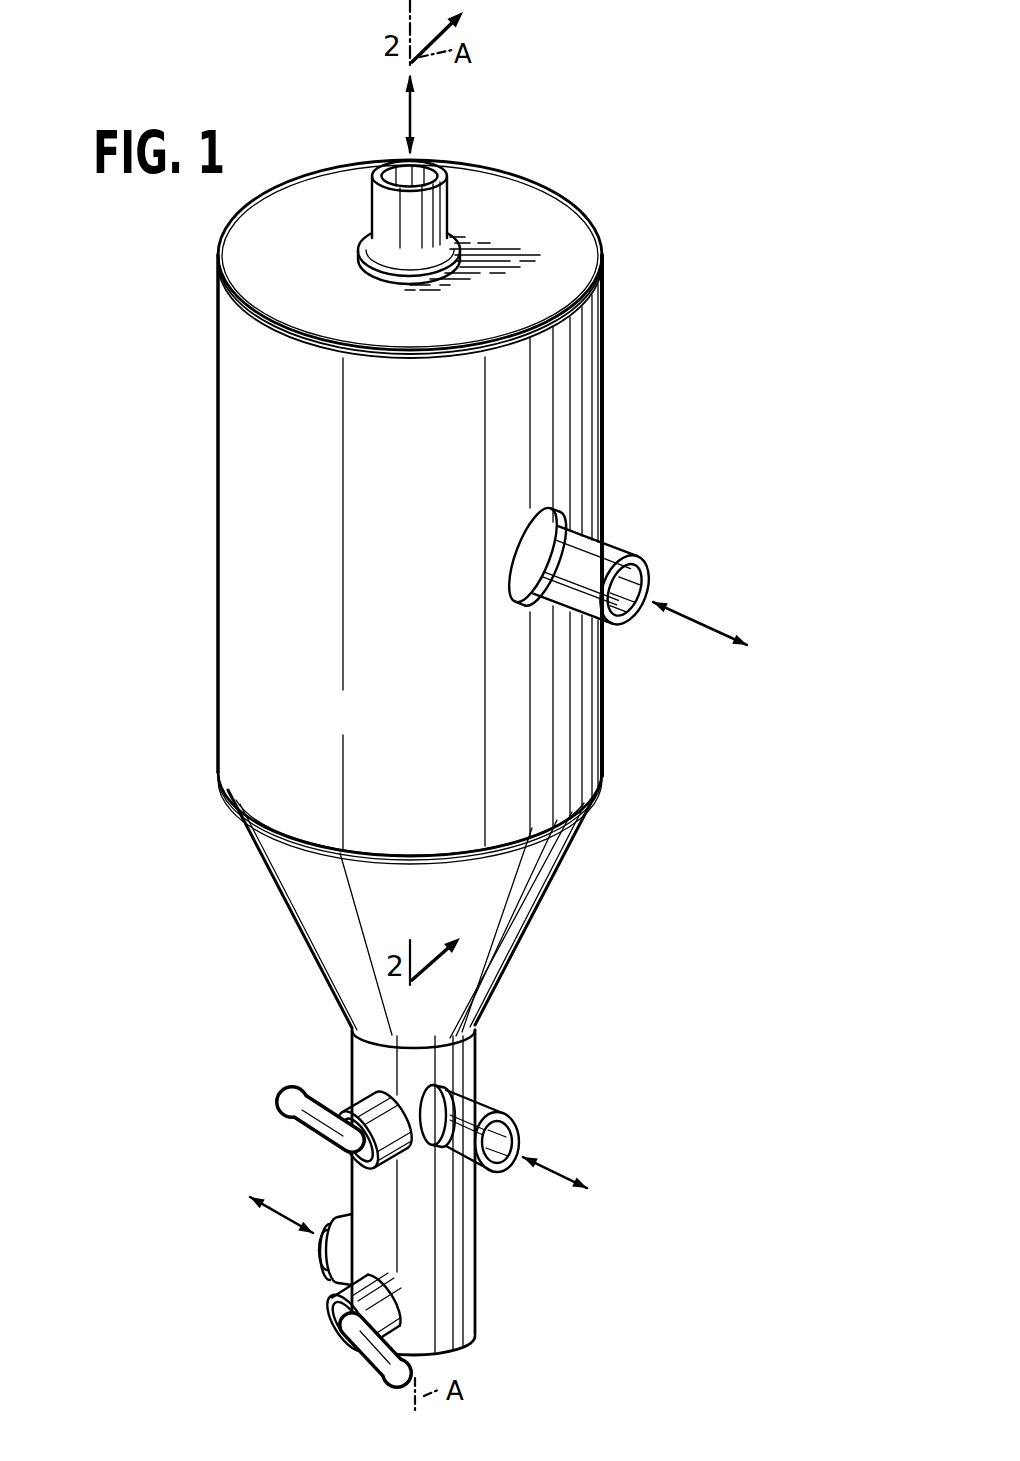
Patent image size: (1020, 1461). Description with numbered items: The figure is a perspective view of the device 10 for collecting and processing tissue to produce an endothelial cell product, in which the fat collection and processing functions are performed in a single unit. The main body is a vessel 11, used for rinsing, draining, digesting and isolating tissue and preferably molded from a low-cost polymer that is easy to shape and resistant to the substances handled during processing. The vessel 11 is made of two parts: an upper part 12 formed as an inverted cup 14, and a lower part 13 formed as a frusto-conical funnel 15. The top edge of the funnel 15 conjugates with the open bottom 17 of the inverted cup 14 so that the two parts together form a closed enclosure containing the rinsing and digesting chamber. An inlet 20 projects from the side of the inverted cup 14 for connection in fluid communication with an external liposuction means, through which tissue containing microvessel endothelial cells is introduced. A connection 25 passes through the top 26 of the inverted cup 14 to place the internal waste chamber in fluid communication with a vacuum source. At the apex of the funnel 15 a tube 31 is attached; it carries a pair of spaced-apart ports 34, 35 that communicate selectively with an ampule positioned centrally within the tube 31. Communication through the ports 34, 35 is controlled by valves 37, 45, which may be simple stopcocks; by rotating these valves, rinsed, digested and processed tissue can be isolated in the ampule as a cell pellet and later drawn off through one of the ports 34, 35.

The device 10 is at (630, 157).
The vessel 11 is at (218, 535).
The upper part 12 is at (580, 393).
The lower part 13 is at (492, 992).
The inverted cup 14 is at (235, 323).
The frusto-conical funnel 15 is at (320, 897).
The open bottom 17 is at (543, 827).
The inlet 20 is at (607, 555).
The connection 25 is at (450, 213).
The top 26 is at (312, 193).
The tube 31 is at (457, 1297).
The port 34 is at (483, 1167).
The port 35 is at (330, 1237).
The valve 37 is at (272, 1097).
The valve 45 is at (330, 1335).